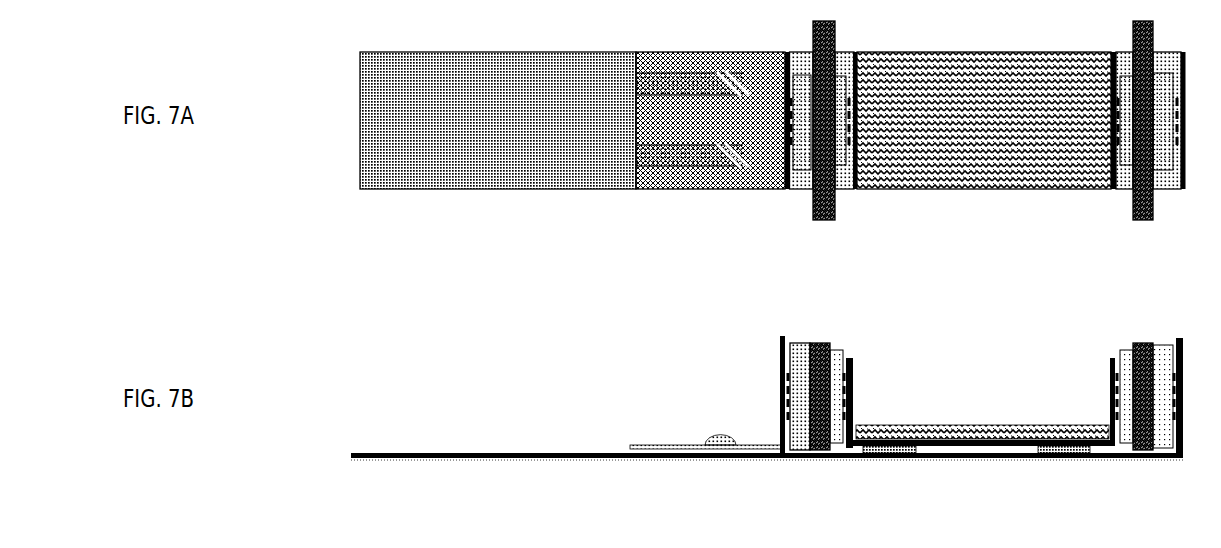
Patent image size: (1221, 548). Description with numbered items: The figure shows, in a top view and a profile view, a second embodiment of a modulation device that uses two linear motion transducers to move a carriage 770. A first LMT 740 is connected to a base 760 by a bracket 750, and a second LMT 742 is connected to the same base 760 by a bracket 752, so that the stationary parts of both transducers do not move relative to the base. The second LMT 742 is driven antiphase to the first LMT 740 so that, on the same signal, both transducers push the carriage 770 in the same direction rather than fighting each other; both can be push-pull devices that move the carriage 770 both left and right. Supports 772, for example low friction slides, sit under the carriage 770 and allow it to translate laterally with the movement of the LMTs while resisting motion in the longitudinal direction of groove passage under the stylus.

In FIG. 7A, the first LMT 740 is at (807, 212).
In FIG. 7B, the first LMT 740 is at (800, 437).
In FIG. 7A, the second LMT 742 is at (1117, 212).
In FIG. 7B, the second LMT 742 is at (1140, 334).
In FIG. 7A, the bracket 750 is at (757, 181).
In FIG. 7B, the bracket 750 is at (745, 438).
In FIG. 7A, the bracket 752 is at (1177, 123).
In FIG. 7B, the bracket 752 is at (1176, 400).
In FIG. 7A, the base 760 is at (413, 97).
In FIG. 7A, the carriage 770 is at (985, 122).
In FIG. 7B, the carriage 770 is at (968, 412).
In FIG. 7B, the supports 772 is at (1035, 450).